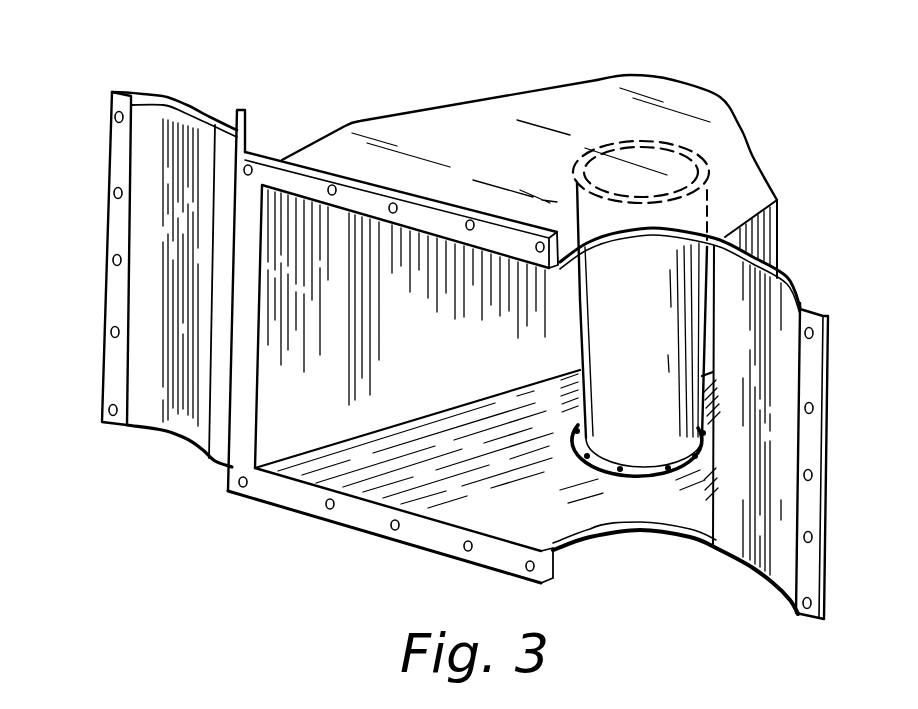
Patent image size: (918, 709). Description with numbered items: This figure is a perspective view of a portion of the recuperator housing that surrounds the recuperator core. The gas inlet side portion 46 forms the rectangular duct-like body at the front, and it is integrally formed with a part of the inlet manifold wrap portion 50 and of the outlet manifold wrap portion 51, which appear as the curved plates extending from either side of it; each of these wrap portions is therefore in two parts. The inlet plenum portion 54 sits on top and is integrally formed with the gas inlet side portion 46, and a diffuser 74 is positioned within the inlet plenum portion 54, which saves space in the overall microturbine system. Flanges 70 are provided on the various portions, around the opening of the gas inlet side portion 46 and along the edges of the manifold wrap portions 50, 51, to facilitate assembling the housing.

The gas inlet side portion 46 is at (235, 402).
The inlet manifold wrap portion 50 is at (170, 437).
The outlet manifold wrap portion 51 is at (757, 565).
The inlet plenum portion 54 is at (590, 88).
The flanges 70 is at (438, 217).
The diffuser 74 is at (585, 321).